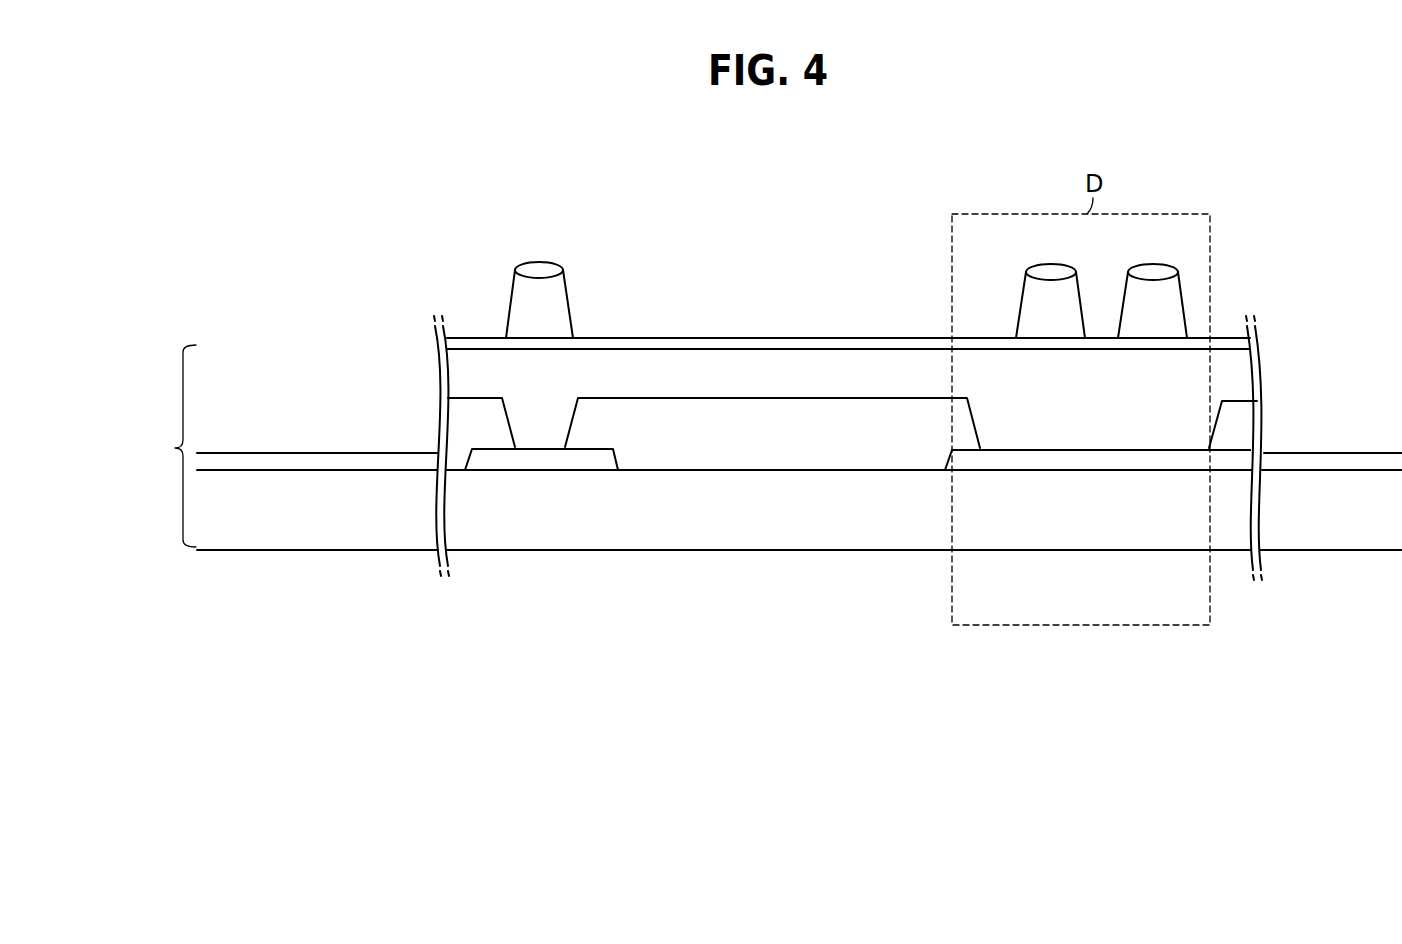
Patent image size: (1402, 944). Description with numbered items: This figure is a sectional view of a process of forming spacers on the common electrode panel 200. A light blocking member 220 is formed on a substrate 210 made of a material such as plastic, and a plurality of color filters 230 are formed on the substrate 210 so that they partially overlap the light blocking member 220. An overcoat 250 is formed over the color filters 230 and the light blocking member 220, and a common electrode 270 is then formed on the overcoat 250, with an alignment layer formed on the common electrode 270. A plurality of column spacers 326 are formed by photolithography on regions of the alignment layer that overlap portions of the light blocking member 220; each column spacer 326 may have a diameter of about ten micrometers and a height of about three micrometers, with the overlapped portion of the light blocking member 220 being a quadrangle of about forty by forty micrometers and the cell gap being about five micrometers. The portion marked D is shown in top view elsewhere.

The common electrode panel 200 is at (163, 446).
The substrate 210 is at (333, 542).
The light blocking member 220 is at (588, 458).
The color filters 230 is at (497, 432).
The overcoat 250 is at (1188, 432).
The common electrode 270 is at (337, 457).
The column spacers 326 is at (563, 288).